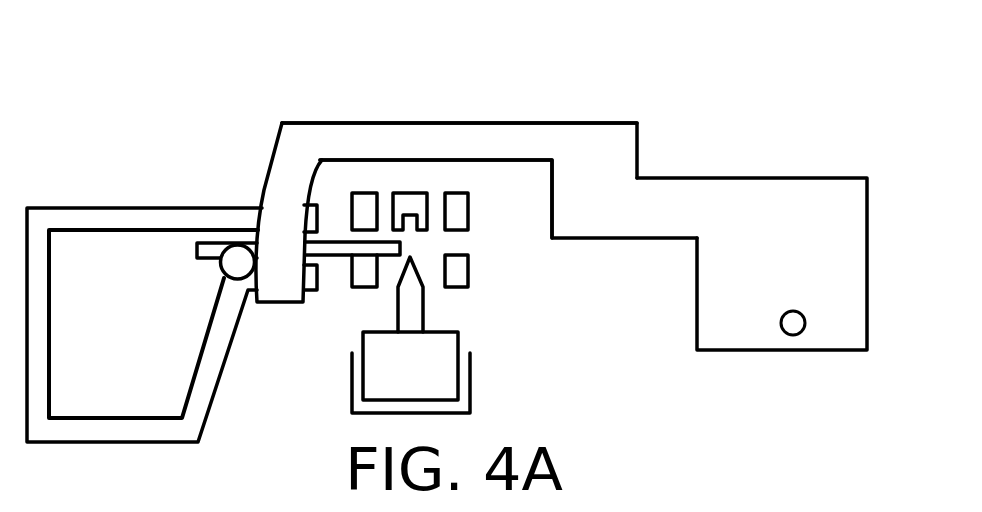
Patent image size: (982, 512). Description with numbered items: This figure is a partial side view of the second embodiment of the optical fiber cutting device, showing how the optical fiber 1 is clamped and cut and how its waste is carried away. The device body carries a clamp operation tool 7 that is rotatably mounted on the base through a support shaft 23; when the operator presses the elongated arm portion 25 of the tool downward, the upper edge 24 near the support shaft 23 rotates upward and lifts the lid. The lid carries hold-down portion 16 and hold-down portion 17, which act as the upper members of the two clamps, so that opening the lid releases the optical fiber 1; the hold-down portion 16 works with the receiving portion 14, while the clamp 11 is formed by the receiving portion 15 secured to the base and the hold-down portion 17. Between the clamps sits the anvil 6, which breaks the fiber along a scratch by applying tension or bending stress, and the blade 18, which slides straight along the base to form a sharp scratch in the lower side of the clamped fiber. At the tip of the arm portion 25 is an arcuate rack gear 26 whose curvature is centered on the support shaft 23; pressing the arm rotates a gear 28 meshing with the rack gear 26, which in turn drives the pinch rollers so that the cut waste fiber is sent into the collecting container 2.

The collecting container 2 is at (71, 208).
The optical fiber 1 is at (208, 243).
The gear 28 is at (236, 276).
The arcuate rack gear 26 is at (262, 195).
The arm portion 25 is at (517, 123).
The clamp operation tool 7 is at (455, 123).
The upper edge 24 is at (762, 178).
The support shaft 23 is at (793, 336).
The clamp 11 is at (510, 193).
The hold-down portion 16 is at (365, 193).
The anvil 6 is at (410, 193).
The hold-down portion 17 is at (468, 212).
The receiving portion 15 is at (468, 268).
The receiving portion 14 is at (360, 288).
The blade 18 is at (414, 310).